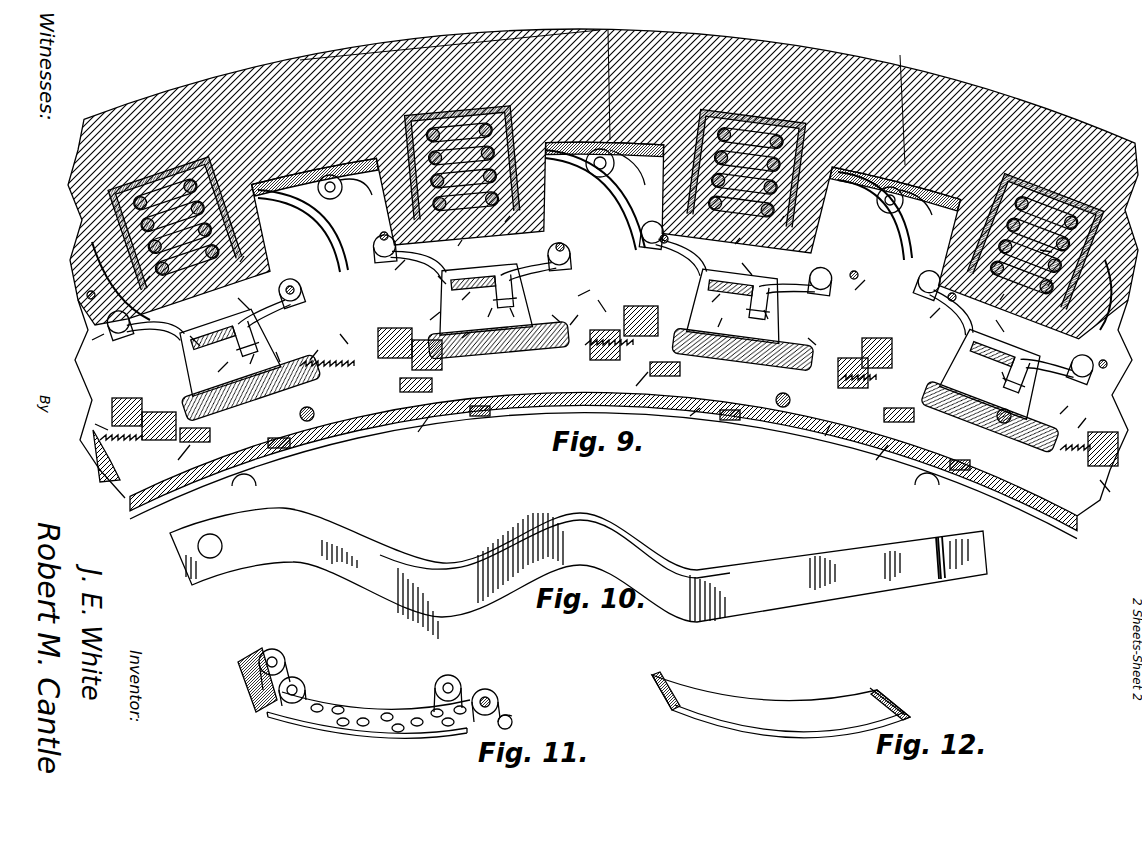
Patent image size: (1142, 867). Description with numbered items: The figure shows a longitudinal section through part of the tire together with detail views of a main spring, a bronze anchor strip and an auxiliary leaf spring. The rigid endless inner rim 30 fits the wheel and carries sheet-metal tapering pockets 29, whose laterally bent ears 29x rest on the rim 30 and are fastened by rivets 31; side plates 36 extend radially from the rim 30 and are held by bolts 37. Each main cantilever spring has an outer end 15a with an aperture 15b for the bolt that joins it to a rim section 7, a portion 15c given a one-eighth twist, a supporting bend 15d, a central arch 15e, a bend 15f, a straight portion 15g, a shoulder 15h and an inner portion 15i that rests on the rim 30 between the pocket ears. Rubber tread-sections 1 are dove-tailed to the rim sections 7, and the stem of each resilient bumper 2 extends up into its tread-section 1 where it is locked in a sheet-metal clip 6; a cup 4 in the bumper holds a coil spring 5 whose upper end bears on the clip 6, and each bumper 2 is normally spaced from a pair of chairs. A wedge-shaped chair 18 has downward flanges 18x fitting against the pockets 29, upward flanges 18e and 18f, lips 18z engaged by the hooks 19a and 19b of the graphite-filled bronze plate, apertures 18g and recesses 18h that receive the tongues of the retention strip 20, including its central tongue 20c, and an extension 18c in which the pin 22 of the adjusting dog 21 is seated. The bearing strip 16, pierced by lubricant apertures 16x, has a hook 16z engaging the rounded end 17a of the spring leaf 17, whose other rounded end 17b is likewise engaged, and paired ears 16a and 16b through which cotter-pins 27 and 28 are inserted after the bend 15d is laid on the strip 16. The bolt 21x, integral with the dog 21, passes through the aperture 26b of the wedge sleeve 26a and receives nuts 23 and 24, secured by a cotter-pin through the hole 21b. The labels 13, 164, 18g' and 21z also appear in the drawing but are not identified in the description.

In FIG. 9, the tread-section 1 is at (175, 94).
In FIG. 9, the resilient bumper 2 is at (577, 267).
In FIG. 9, the sheet metal cup 4 is at (641, 256).
In FIG. 9, the coil spring 5 is at (606, 209).
In FIG. 9, the sheet metal clip 6 is at (204, 160).
In FIG. 9, the rim section 7 is at (368, 168).
In FIG. 9, the roller 13 is at (629, 184).
In FIG. 9, the outer end of main spring 15a is at (946, 308).
In FIG. 10, the outer end of main spring 15a is at (190, 588).
In FIG. 10, the aperture 15b is at (222, 546).
In FIG. 9, the twisted portion 15c is at (612, 240).
In FIG. 10, the twisted portion 15c is at (271, 549).
In FIG. 9, the supporting bend 15d is at (411, 261).
In FIG. 10, the supporting bend 15d is at (430, 603).
In FIG. 9, the arched central portion 15e is at (871, 281).
In FIG. 10, the arched central portion 15e is at (535, 558).
In FIG. 10, the bend 15f is at (714, 598).
In FIG. 9, the straight portion 15g is at (825, 437).
In FIG. 10, the straight portion 15g is at (855, 570).
In FIG. 10, the shoulder 15h is at (944, 580).
In FIG. 10, the inner portion of main spring 15i is at (965, 554).
In FIG. 11, the bearing strip 16 is at (337, 740).
In FIG. 9, the ear 16a is at (122, 312).
In FIG. 11, the ear 16a is at (275, 650).
In FIG. 9, the ear 16b is at (687, 305).
In FIG. 11, the ear 16b is at (450, 677).
In FIG. 11, the apertures 16x is at (360, 712).
In FIG. 11, the hook 16z is at (264, 712).
In FIG. 11, the end piece 164 is at (521, 721).
In FIG. 9, the spring leaf 17 is at (590, 316).
In FIG. 12, the spring leaf 17 is at (762, 732).
In FIG. 12, the rounded end of leaf 17a is at (652, 690).
In FIG. 12, the rounded end of leaf 17b is at (892, 706).
In FIG. 9, the chair 18 is at (478, 261).
In FIG. 9, the extension 18c is at (691, 358).
In FIG. 9, the upwardly projecting side flange 18e is at (614, 291).
In FIG. 9, the upwardly projecting side flange 18f is at (460, 336).
In FIG. 9, the aperture 18g is at (185, 334).
In FIG. 9, the plate portion 18g' is at (639, 349).
In FIG. 9, the recess 18h is at (481, 340).
In FIG. 9, the downwardly projecting side flange 18x is at (457, 338).
In FIG. 9, the lip 18z is at (620, 304).
In FIG. 9, the hook 19a is at (256, 325).
In FIG. 9, the hook 19b is at (574, 291).
In FIG. 9, the retention strip 20 is at (603, 316).
In FIG. 9, the central tongue 20c is at (627, 334).
In FIG. 9, the adjusting dog 21 is at (510, 405).
In FIG. 9, the cotter-pin hole 21b is at (710, 357).
In FIG. 9, the bolt 21x is at (603, 454).
In FIG. 9, the band portion 21z is at (87, 421).
In FIG. 9, the pin 22 is at (620, 387).
In FIG. 9, the nut 23 is at (1100, 506).
In FIG. 9, the nut 24 is at (612, 361).
In FIG. 9, the sleeve 26a is at (532, 418).
In FIG. 9, the aperture of sleeve 26b is at (1056, 252).
In FIG. 9, the cotter-pin 27 is at (130, 310).
In FIG. 9, the cotter-pin 28 is at (700, 301).
In FIG. 9, the tapering pocket 29 is at (678, 338).
In FIG. 9, the ear 29x is at (624, 446).
In FIG. 9, the inner rim 30 is at (390, 408).
In FIG. 9, the rivet 31 is at (585, 477).
In FIG. 9, the side plate 36 is at (572, 400).
In FIG. 9, the bolt 37 is at (312, 420).